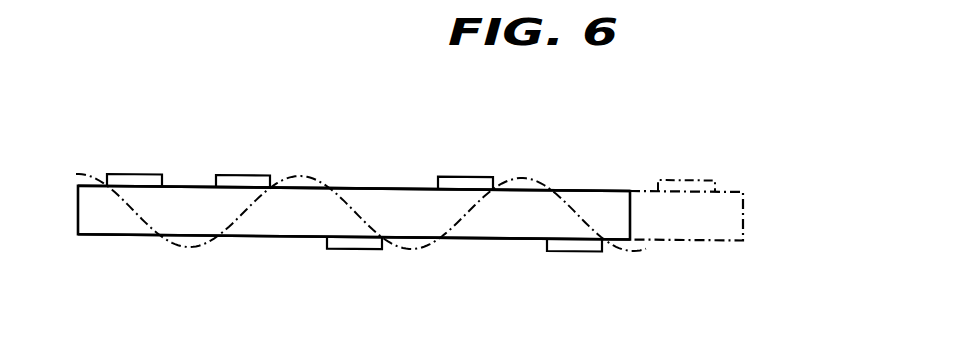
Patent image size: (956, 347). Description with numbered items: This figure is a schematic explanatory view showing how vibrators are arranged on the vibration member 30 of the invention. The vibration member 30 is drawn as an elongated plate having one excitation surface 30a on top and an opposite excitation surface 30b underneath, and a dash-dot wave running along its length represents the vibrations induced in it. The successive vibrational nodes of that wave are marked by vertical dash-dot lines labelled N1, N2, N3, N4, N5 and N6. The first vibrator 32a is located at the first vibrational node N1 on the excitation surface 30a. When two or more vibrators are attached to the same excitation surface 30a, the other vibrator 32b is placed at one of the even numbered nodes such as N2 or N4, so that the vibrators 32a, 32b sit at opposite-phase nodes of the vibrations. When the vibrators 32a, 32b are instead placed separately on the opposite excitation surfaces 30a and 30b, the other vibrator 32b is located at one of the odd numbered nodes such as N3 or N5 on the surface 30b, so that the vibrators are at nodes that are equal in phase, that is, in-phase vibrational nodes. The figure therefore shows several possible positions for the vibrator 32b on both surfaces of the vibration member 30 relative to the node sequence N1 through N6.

The vibration member 30 is at (110, 218).
The excitation surface 30a is at (390, 186).
The excitation surface 30b is at (290, 237).
The first vibrator 32a is at (114, 174).
The vibrator 32b is at (258, 175).
The first vibrational node N1 is at (134, 210).
The even numbered node N2 is at (245, 210).
The odd numbered node N3 is at (355, 210).
The even numbered node N4 is at (466, 210).
The odd numbered node N5 is at (576, 210).
The vibrational node N6 is at (687, 203).